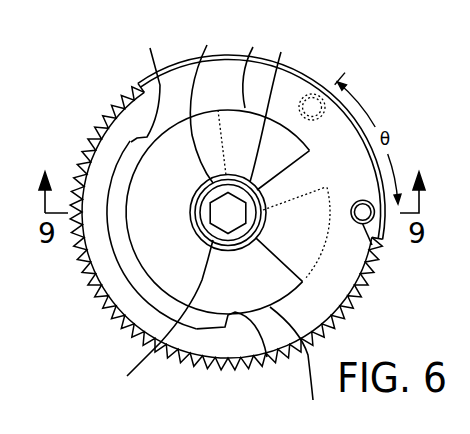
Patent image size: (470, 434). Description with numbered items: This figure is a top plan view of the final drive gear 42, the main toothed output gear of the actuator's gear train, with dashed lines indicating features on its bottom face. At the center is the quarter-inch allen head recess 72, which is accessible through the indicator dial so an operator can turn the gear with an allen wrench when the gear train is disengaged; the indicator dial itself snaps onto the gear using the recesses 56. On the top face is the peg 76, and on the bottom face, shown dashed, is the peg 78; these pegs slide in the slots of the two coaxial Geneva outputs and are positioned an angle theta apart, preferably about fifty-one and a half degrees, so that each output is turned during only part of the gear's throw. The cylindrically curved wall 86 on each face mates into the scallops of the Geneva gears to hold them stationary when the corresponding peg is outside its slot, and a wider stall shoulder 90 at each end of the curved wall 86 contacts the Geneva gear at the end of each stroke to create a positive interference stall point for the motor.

The final drive gear 42 is at (100, 76).
The recesses 56 is at (193, 208).
The allen head recess 72 is at (261, 135).
The peg 76 is at (382, 262).
The peg 78 is at (311, 93).
The cylindrically curved wall 86 is at (284, 223).
The stall shoulder 90 is at (265, 386).